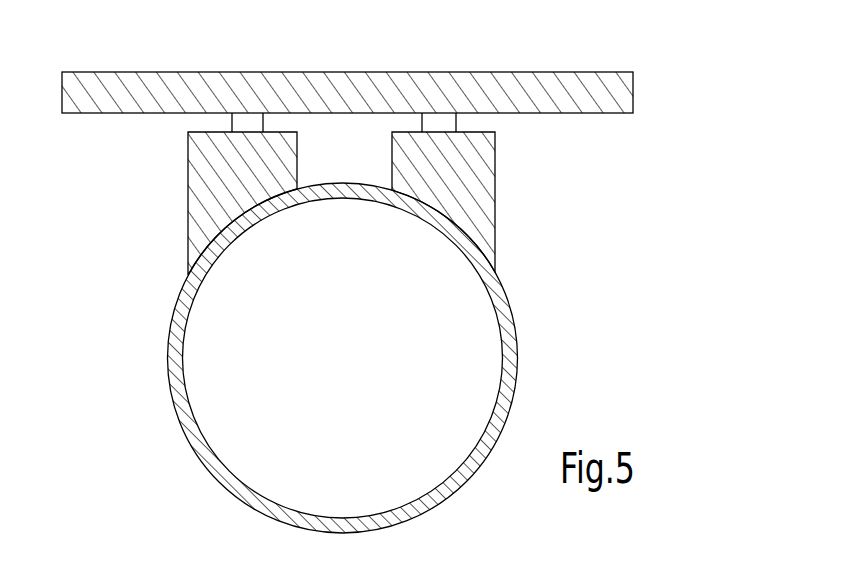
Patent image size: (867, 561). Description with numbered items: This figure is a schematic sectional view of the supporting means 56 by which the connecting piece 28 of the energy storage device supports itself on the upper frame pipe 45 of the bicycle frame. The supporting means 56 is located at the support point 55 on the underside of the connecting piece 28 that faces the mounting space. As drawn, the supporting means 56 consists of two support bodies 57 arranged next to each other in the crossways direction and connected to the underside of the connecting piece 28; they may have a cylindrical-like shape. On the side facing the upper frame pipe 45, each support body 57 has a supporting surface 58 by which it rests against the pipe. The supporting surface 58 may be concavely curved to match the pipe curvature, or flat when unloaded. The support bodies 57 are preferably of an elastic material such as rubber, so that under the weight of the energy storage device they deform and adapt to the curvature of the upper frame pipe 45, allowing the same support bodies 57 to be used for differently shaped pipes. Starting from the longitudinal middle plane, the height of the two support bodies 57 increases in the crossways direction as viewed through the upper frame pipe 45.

The connecting piece 28 is at (618, 92).
The upper frame pipe 45 is at (515, 350).
The support point 55 is at (397, 235).
The supporting means 56 is at (608, 167).
The support body 57 is at (188, 175).
The supporting surface 58 is at (232, 238).